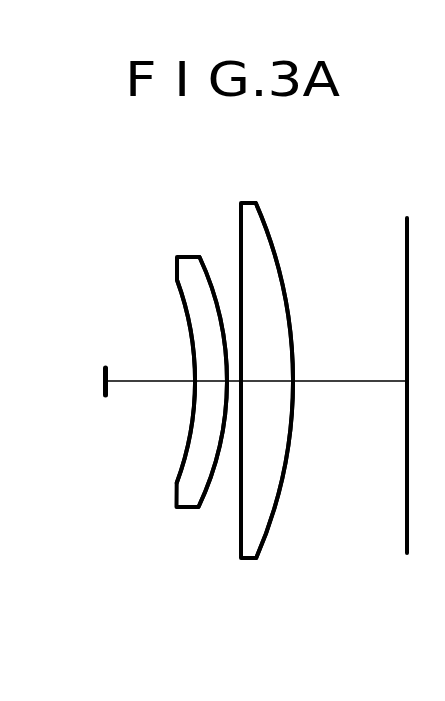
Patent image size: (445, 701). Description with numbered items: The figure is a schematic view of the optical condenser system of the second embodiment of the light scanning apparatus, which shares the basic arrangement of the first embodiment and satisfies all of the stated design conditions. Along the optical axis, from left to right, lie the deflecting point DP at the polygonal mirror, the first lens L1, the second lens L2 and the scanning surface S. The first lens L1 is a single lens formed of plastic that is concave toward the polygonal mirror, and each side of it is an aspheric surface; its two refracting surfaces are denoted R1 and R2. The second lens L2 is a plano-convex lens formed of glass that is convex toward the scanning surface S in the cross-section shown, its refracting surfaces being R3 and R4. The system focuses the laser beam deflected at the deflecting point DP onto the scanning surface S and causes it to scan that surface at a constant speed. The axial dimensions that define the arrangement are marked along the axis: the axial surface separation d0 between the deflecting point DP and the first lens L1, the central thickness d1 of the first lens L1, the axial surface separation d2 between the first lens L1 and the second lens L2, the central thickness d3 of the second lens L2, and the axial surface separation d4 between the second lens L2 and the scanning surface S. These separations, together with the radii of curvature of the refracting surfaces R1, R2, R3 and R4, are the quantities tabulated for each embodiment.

The first lens L1 is at (188, 268).
The second lens L2 is at (262, 215).
The refracting surface of first lens R1 is at (181, 466).
The refracting surface of first lens R2 is at (207, 490).
The refracting surface of second lens R3 is at (240, 528).
The refracting surface of second lens R4 is at (288, 478).
The deflecting point DP is at (102, 388).
The scanning surface S is at (405, 527).
The axial surface separation between deflecting point and first lens d0 is at (152, 383).
The central thickness of first lens d1 is at (202, 380).
The axial surface separation between first lens and second lens d2 is at (235, 376).
The central thickness of second lens d3 is at (263, 384).
The axial surface separation between second lens and scanning surface d4 is at (361, 382).